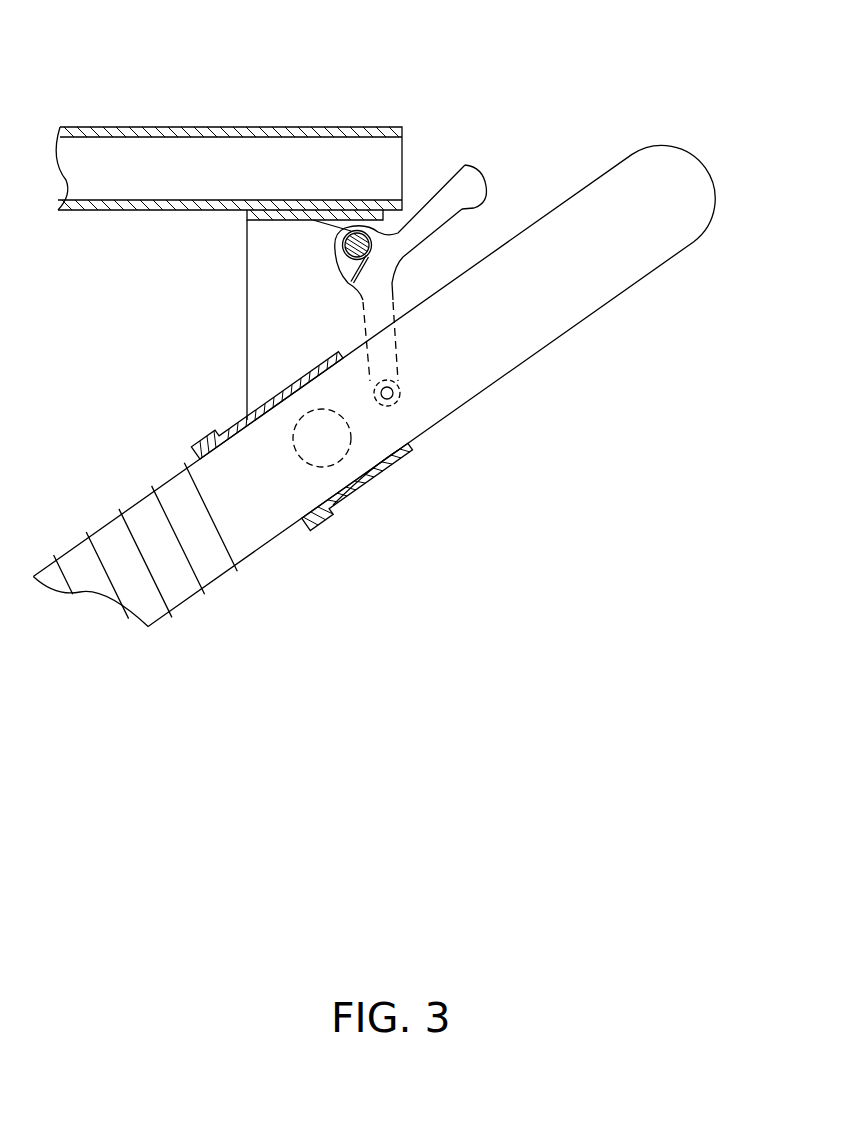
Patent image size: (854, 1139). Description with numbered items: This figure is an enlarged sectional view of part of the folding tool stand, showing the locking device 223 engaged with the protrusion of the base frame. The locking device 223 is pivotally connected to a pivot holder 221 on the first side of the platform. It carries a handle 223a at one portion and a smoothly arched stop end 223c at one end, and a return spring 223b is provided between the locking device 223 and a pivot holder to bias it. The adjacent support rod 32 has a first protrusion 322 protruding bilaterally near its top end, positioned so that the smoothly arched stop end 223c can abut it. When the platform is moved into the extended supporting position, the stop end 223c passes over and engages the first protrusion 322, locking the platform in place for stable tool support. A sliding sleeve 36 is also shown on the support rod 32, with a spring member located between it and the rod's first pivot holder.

The pivot holder 221 is at (257, 308).
The locking device 223 is at (483, 163).
The handle 223a is at (463, 183).
The return spring 223b is at (375, 266).
The smoothly arched stop end 223c is at (398, 400).
The support rod 32 is at (562, 317).
The first protrusion 322 is at (400, 402).
The sliding sleeve 36 is at (283, 543).